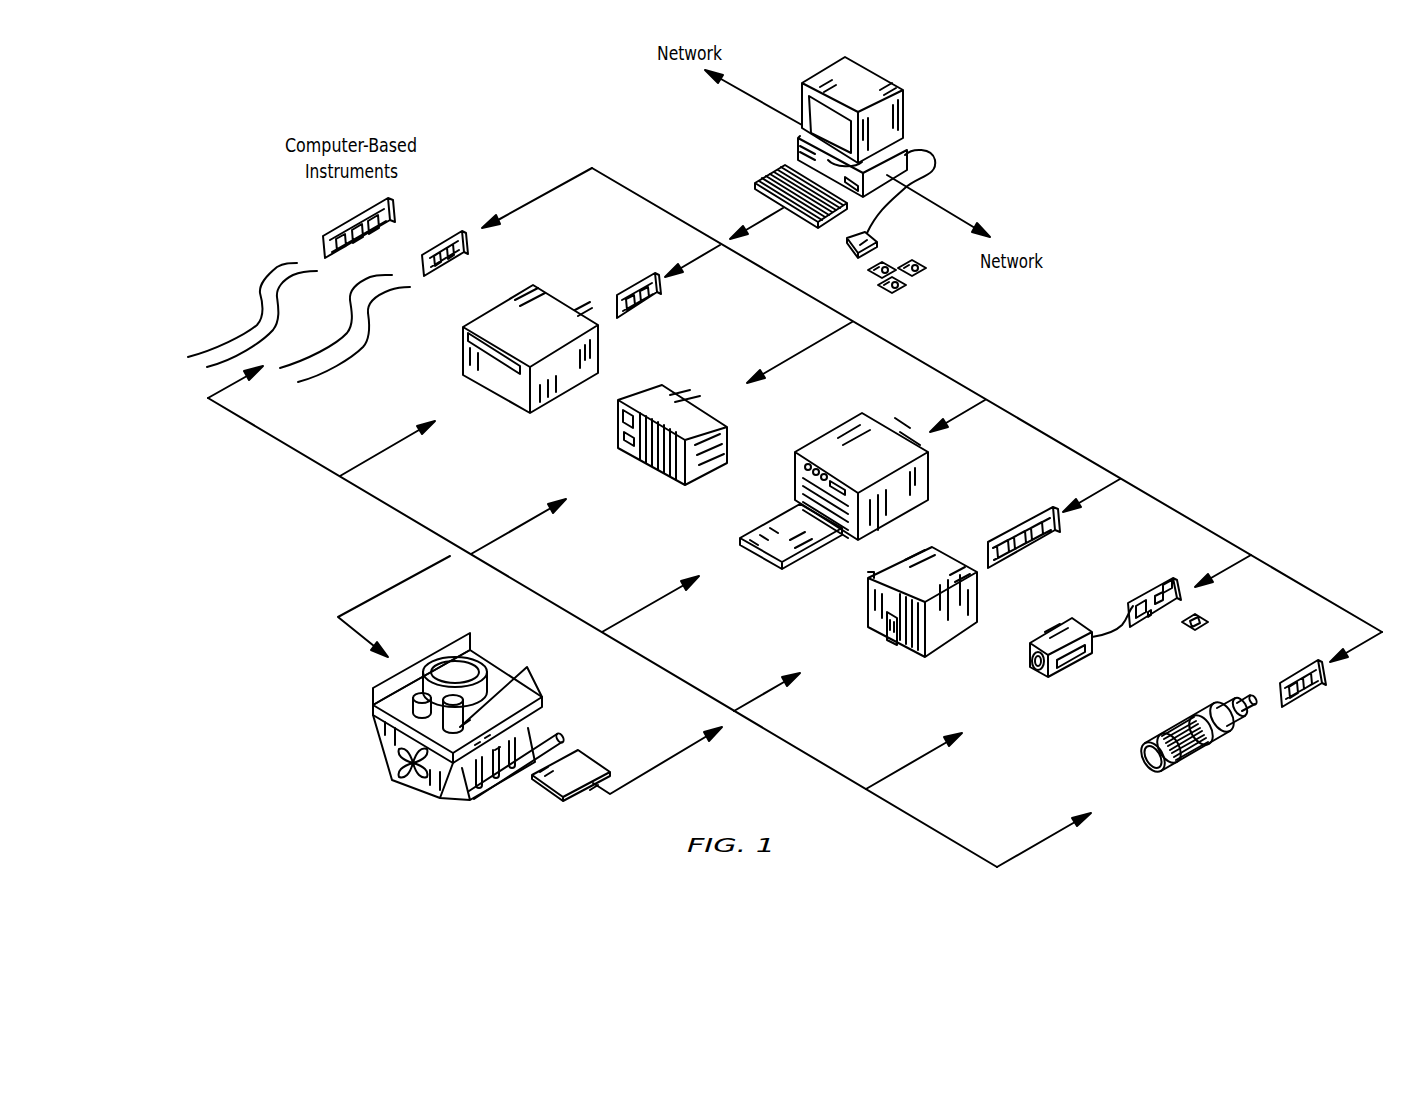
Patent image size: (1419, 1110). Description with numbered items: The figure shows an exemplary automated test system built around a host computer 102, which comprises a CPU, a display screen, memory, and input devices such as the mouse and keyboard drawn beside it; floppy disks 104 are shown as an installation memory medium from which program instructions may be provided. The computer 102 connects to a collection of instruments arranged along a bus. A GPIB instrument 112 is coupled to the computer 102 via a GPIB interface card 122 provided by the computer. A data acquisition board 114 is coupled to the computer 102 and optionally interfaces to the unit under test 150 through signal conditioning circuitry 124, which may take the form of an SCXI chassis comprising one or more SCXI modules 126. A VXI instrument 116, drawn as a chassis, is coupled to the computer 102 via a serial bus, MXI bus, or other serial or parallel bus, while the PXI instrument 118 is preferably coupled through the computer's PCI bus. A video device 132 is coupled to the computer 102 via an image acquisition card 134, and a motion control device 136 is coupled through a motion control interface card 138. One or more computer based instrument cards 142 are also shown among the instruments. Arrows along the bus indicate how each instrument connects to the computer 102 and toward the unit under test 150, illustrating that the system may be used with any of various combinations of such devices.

The host computer 102 is at (877, 72).
The floppy disks 104 is at (900, 290).
The GPIB instrument 112 is at (503, 322).
The data acquisition board 114 is at (1013, 558).
The VXI instrument 116 is at (845, 440).
The PXI instrument 118 is at (680, 407).
The GPIB interface card 122 is at (635, 285).
The signal conditioning circuitry 124 is at (877, 607).
The SCXI module 126 is at (897, 637).
The video device 132 is at (1073, 662).
The image acquisition card 134 is at (1150, 597).
The motion control device 136 is at (1183, 757).
The motion control interface card 138 is at (1300, 700).
The computer based instrument card 142 is at (350, 220).
The unit under test 150 is at (383, 728).